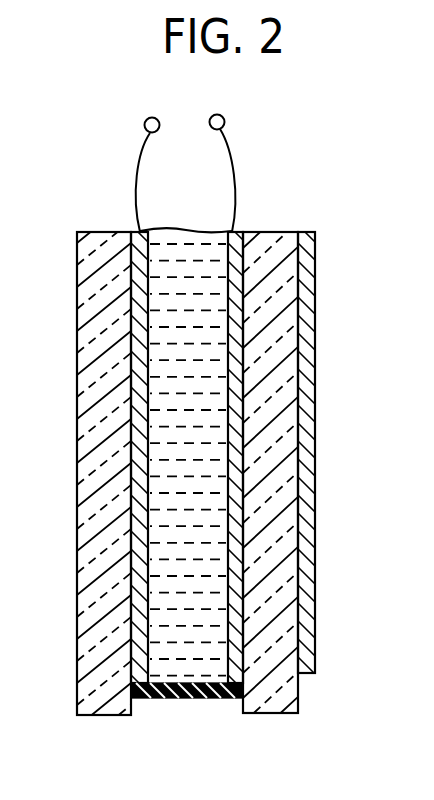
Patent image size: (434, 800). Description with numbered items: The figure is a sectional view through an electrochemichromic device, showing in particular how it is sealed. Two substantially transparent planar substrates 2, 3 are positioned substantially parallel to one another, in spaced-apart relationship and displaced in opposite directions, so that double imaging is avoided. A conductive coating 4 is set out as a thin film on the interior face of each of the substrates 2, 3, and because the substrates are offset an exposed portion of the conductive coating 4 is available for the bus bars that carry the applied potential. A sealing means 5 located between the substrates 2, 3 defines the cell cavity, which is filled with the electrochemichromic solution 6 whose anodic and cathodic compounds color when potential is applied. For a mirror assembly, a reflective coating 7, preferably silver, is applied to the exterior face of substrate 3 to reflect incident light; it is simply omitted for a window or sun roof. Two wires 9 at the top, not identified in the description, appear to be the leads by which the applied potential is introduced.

The transparent planar substrate 2 is at (92, 300).
The transparent planar substrate 3 is at (283, 303).
The conductive coating 4 is at (148, 658).
The sealing means 5 is at (145, 690).
The electrochemichromic solution 6 is at (213, 446).
The reflective coating 7 is at (308, 572).
The lead wires 9 is at (233, 155).